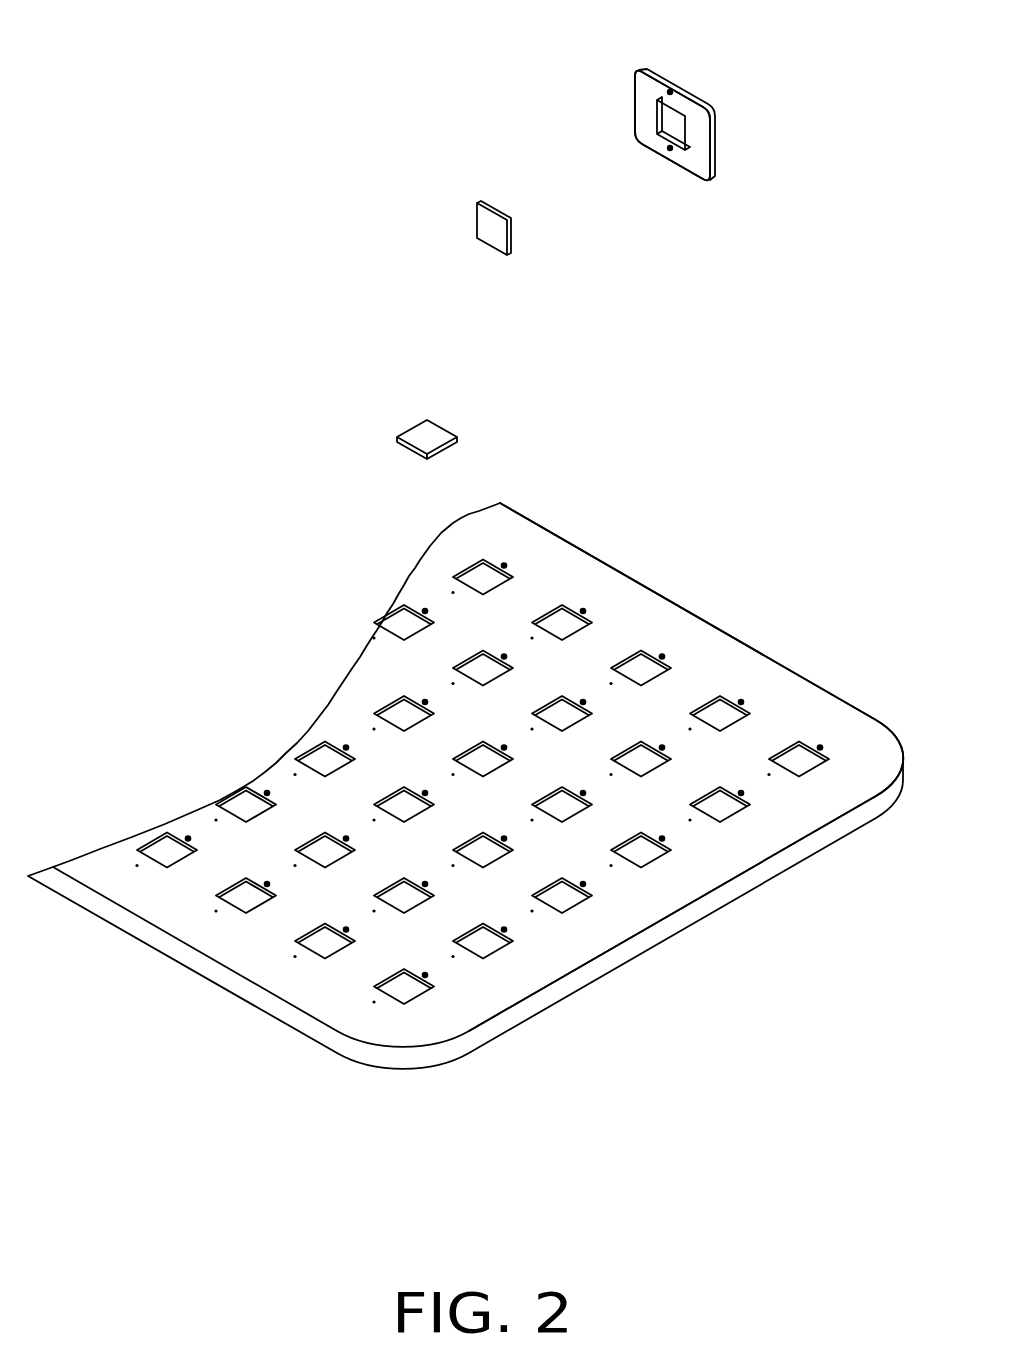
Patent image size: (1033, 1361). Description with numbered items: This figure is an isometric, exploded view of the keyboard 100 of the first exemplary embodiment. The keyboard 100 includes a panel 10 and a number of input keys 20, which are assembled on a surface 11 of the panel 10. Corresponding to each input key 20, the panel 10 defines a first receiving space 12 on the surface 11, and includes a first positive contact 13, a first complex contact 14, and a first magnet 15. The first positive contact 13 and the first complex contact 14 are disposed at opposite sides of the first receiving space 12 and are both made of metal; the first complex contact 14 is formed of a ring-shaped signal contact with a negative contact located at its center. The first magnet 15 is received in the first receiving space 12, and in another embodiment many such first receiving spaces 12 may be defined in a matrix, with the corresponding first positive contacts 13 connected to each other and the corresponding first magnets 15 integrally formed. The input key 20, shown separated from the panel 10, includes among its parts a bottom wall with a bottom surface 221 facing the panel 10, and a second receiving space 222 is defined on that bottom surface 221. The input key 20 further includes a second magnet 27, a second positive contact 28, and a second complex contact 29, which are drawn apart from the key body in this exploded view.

The keyboard 100 is at (243, 158).
The panel 10 is at (770, 872).
The surface 11 is at (640, 908).
The first receiving space 12 is at (152, 848).
The first positive contact 13 is at (135, 866).
The first complex contact 14 is at (188, 836).
The first magnet 15 is at (430, 432).
The input key 20 is at (643, 80).
The bottom surface 221 is at (690, 167).
The second receiving space 222 is at (663, 123).
The second magnet 27 is at (488, 224).
The second positive contact 28 is at (672, 90).
The second complex contact 29 is at (670, 150).